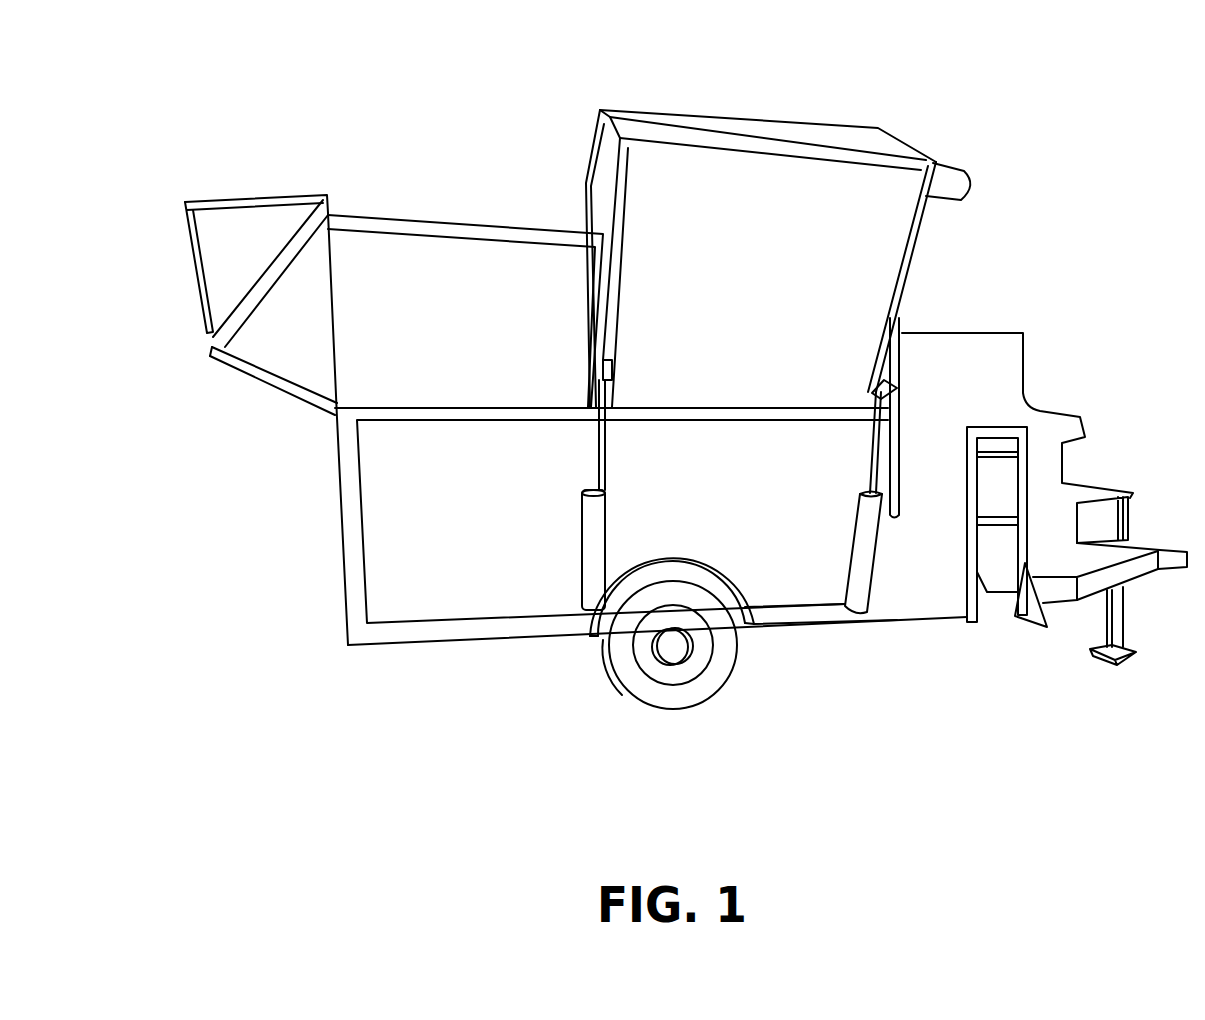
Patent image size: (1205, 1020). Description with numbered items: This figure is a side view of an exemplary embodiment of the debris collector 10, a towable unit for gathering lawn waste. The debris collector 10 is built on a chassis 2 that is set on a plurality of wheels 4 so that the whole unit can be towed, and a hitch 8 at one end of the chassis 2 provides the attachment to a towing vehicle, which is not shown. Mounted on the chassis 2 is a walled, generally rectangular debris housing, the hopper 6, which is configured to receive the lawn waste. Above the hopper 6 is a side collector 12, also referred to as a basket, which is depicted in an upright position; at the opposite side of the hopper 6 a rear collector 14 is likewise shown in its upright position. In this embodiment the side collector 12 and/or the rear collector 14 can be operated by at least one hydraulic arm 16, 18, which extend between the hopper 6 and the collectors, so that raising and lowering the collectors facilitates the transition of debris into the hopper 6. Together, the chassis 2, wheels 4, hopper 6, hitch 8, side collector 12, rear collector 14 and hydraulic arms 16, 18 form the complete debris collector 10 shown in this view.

The chassis 2 is at (347, 633).
The wheels 4 is at (617, 677).
The hopper 6 is at (347, 509).
The hitch 8 is at (1167, 545).
The debris collector 10 is at (843, 63).
The side collector 12 is at (676, 118).
The rear collector 14 is at (223, 280).
The hydraulic arm 16 is at (856, 578).
The hydraulic arm 18 is at (580, 578).